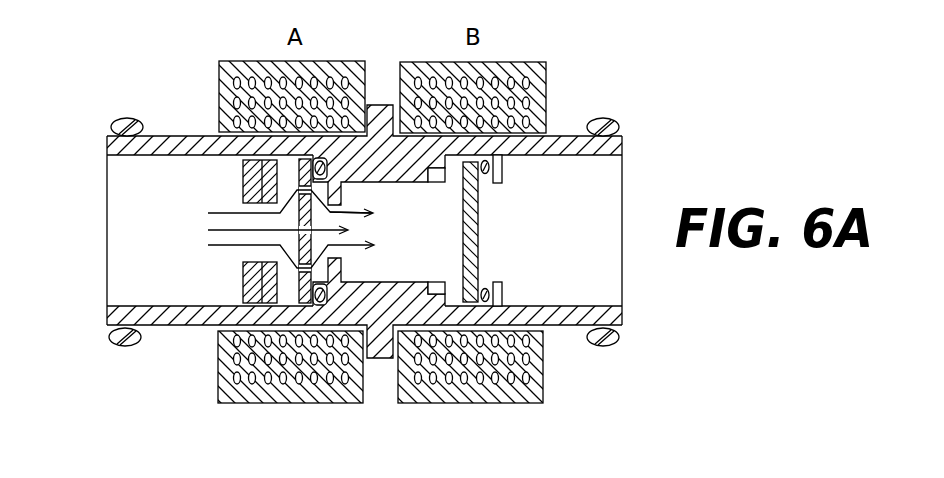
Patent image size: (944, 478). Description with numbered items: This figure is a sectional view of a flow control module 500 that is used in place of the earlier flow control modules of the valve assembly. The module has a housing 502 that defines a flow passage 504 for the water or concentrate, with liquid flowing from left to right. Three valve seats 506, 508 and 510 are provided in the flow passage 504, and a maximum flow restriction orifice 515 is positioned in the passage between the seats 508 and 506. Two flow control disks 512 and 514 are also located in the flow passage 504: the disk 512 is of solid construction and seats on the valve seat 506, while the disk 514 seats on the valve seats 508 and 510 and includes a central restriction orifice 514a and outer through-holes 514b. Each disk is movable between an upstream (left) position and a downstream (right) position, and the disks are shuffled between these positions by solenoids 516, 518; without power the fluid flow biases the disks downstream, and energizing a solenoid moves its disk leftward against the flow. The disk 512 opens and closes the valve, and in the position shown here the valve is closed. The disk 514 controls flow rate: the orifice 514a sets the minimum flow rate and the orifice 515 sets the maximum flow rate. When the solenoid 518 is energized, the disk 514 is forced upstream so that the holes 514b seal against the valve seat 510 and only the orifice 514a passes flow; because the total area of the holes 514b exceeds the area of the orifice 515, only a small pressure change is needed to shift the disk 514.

The flow control module 500 is at (571, 96).
The housing 502 is at (623, 147).
The flow passage 504 is at (455, 245).
The valve seat 506 is at (485, 292).
The valve seat 508 is at (347, 293).
The valve seat 510 is at (243, 288).
The flow control disk 512 is at (478, 203).
The flow control disk 514 is at (297, 222).
The central restriction orifice 514a is at (297, 266).
The outer through-holes 514b is at (297, 190).
The maximum flow restriction orifice 515 is at (333, 222).
The solenoid 516 is at (424, 60).
The solenoid 518 is at (245, 60).